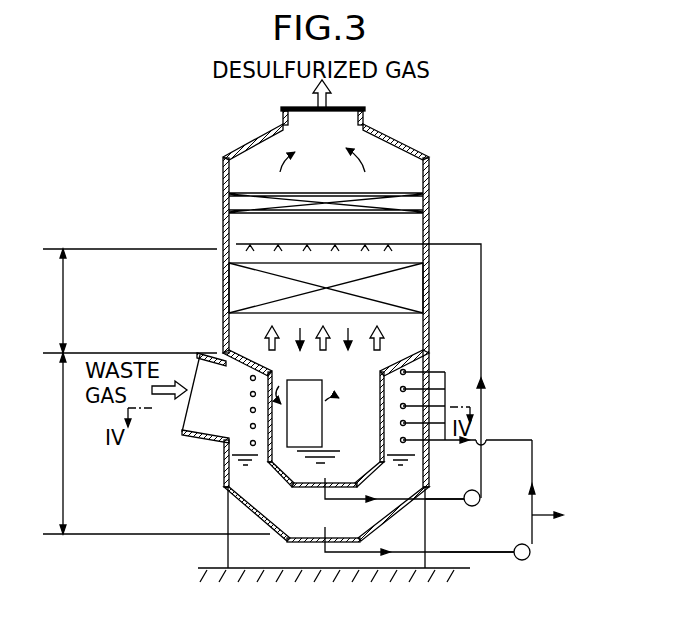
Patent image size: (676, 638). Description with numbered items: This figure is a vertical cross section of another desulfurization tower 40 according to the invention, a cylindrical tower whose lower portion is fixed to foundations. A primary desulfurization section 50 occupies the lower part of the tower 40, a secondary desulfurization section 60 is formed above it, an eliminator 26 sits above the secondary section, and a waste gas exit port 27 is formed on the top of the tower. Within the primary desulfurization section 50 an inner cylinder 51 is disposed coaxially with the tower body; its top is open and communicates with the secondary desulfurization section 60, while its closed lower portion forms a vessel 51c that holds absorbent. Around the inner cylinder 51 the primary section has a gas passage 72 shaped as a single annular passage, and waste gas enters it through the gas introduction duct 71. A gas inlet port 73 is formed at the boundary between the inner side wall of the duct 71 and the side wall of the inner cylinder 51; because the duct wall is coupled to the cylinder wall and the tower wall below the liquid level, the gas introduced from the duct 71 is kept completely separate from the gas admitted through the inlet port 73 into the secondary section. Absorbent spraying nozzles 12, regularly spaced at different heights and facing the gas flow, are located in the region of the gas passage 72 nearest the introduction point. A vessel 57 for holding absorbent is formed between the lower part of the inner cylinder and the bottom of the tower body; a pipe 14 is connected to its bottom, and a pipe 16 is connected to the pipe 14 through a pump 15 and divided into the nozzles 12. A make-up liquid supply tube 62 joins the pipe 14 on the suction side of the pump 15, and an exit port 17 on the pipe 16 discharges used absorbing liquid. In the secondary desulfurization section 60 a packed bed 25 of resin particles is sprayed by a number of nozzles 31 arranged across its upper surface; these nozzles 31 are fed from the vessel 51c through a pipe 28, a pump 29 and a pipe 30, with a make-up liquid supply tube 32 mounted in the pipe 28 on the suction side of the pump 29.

The desulfurization tower 40 is at (478, 172).
The waste gas exit port 27 is at (346, 110).
The eliminator 26 is at (230, 193).
The nozzles 31 is at (398, 248).
The packed bed 25 is at (242, 285).
The pipe 30 is at (483, 275).
The secondary desulfurization section 60 is at (126, 301).
The primary desulfurization section 50 is at (150, 443).
The gas introduction duct 71 is at (182, 426).
The absorbent spraying nozzles 12 is at (400, 367).
The vessel 51c is at (297, 472).
The gas inlet port 73 is at (322, 428).
The inner cylinder 51 is at (446, 375).
The gas passage 72 is at (448, 405).
The pipe 16 is at (534, 462).
The exit port 17 is at (548, 513).
The pump 15 is at (527, 560).
The pump 29 is at (478, 505).
The make-up liquid supply tube 32 is at (449, 490).
The pipe 28 is at (435, 500).
The vessel 57 is at (297, 522).
The make-up liquid supply tube 62 is at (490, 562).
The pipe 14 is at (440, 575).